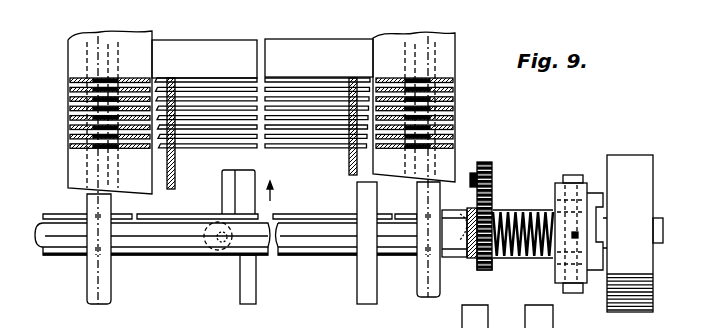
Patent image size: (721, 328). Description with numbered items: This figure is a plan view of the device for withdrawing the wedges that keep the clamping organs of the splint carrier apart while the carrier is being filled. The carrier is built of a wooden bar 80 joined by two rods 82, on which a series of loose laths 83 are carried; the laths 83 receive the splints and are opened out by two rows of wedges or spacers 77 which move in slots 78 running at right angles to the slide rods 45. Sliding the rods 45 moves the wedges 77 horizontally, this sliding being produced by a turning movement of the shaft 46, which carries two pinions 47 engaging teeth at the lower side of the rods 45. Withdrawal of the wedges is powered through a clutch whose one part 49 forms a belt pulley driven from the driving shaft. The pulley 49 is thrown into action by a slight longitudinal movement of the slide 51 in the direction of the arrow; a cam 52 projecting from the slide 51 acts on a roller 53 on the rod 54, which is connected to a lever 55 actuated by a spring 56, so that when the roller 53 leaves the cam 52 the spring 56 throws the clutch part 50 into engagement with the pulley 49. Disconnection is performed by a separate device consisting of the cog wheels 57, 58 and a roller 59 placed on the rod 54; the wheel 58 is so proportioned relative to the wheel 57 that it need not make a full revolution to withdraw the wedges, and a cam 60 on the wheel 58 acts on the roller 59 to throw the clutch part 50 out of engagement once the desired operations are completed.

The rods 45 is at (87, 291).
The shaft 46 is at (40, 217).
The pinions 47 is at (106, 290).
The belt pulley 49 is at (639, 157).
The clutch part 50 is at (586, 180).
The slide 51 is at (357, 302).
The cam 52 is at (222, 194).
The roller 53 is at (197, 248).
The rod 54 is at (320, 255).
The lever 55 is at (576, 293).
The spring 56 is at (517, 258).
The cog wheel 57 is at (488, 270).
The cog wheel 58 is at (492, 180).
The roller 59 is at (455, 256).
The cam 60 is at (471, 175).
The wedges 77 is at (69, 93).
The slots 78 is at (69, 128).
The wooden bar 80 is at (201, 40).
The rods 82 is at (176, 160).
The laths 83 is at (298, 110).